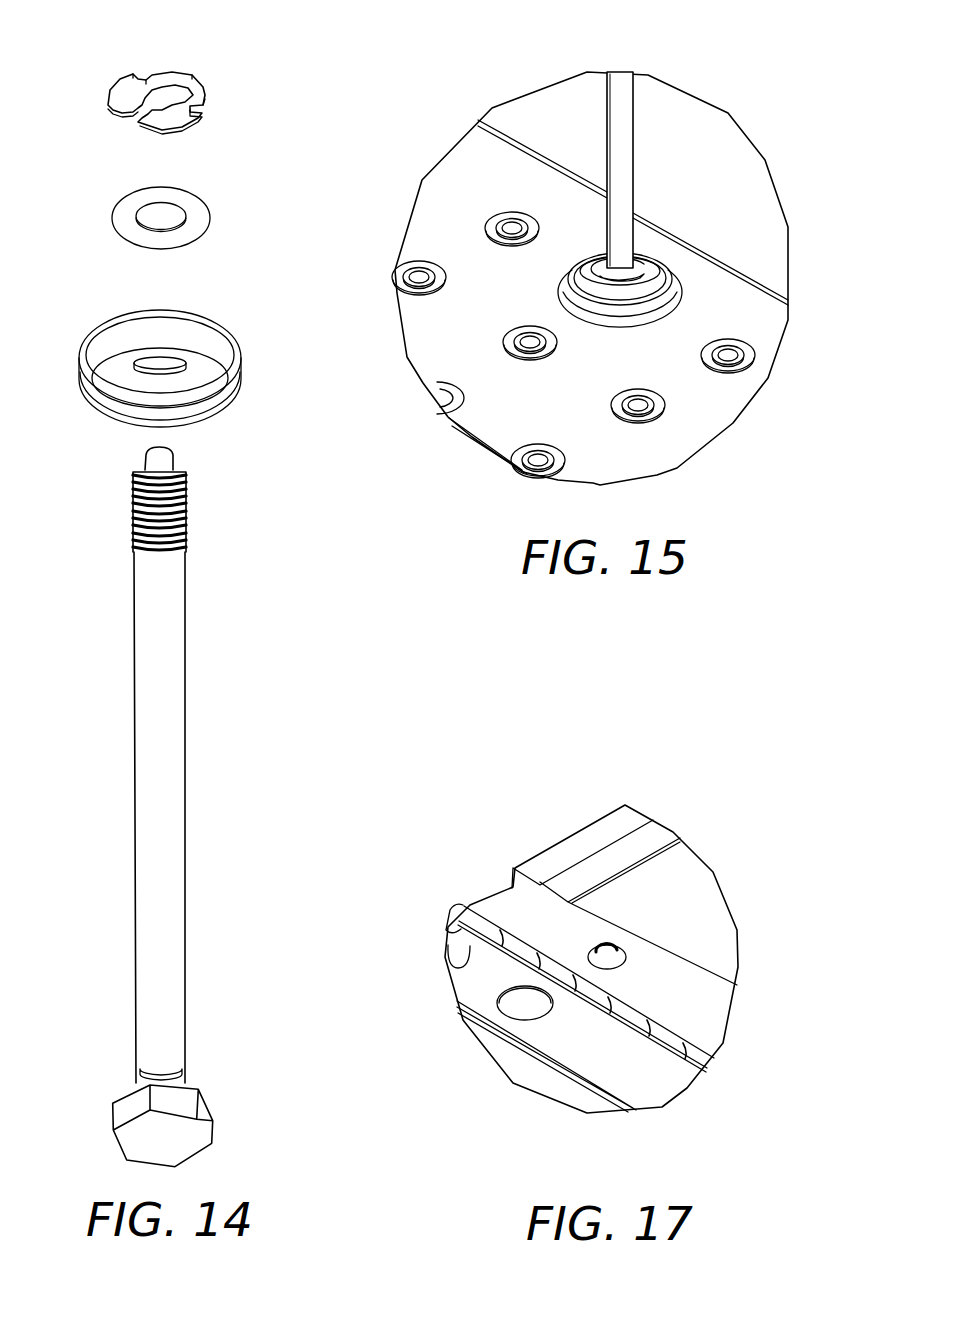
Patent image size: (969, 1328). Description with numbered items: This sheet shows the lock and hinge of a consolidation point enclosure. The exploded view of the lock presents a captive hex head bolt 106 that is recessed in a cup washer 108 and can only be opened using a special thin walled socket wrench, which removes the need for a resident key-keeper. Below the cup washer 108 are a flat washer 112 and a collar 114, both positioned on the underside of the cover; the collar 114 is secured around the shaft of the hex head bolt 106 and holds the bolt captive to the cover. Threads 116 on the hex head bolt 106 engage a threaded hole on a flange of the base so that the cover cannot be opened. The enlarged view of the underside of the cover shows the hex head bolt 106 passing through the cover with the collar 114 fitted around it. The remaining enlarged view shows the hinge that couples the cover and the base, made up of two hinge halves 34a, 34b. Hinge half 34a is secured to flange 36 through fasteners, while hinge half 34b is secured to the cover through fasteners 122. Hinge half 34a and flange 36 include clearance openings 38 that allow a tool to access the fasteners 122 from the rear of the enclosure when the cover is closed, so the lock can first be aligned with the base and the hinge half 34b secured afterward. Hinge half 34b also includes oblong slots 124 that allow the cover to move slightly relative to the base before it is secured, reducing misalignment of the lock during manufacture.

In FIG. 14, the hex head bolt 106 is at (136, 990).
In FIG. 15, the hex head bolt 106 is at (633, 202).
In FIG. 14, the cup washer 108 is at (88, 342).
In FIG. 15, the cup washer 108 is at (620, 290).
In FIG. 14, the flat washer 112 is at (119, 206).
In FIG. 15, the flat washer 112 is at (620, 271).
In FIG. 14, the collar 114 is at (168, 69).
In FIG. 15, the collar 114 is at (642, 254).
In FIG. 14, the threads 116 is at (132, 511).
In FIG. 17, the hinge half 34a is at (672, 1083).
In FIG. 17, the hinge half 34b is at (716, 1020).
In FIG. 17, the flange 36 is at (523, 1047).
In FIG. 17, the clearance openings 38 is at (508, 1003).
In FIG. 17, the fasteners 122 is at (612, 963).
In FIG. 17, the oblong slots 124 is at (624, 951).